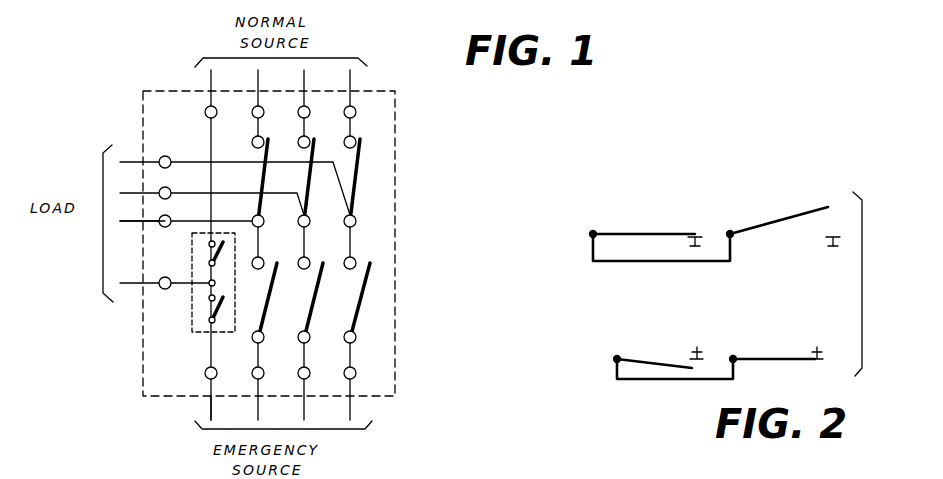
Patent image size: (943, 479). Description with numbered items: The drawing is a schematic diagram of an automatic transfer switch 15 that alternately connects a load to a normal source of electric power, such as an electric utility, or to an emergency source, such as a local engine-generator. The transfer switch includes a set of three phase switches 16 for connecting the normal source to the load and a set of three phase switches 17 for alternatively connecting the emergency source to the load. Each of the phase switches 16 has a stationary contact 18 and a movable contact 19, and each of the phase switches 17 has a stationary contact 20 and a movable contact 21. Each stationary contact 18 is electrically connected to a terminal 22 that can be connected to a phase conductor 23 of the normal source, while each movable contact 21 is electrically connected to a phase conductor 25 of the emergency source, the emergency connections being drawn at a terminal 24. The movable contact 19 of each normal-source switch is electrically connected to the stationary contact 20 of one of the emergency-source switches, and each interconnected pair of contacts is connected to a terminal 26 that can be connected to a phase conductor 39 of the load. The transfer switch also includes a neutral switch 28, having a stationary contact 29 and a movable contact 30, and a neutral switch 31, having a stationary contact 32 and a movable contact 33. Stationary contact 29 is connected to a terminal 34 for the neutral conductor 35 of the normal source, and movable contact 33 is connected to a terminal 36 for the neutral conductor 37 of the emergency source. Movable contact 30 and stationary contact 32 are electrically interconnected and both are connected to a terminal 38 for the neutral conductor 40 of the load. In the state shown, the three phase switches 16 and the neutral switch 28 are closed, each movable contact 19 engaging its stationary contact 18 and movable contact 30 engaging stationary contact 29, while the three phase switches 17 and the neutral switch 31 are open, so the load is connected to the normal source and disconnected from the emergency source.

In FIG. 1, the automatic transfer switch 15 is at (372, 207).
In FIG. 1, the phase switches 16 is at (370, 141).
In FIG. 2, the phase switches 16 is at (704, 220).
In FIG. 1, the phase switches 17 is at (363, 337).
In FIG. 2, the phase switches 17 is at (837, 200).
In FIG. 1, the stationary contact 18 is at (356, 135).
In FIG. 2, the stationary contact 18 is at (703, 242).
In FIG. 1, the movable contact 19 is at (357, 172).
In FIG. 2, the movable contact 19 is at (672, 212).
In FIG. 1, the stationary contact 20 is at (357, 256).
In FIG. 2, the stationary contact 20 is at (828, 238).
In FIG. 1, the movable contact 21 is at (365, 288).
In FIG. 2, the movable contact 21 is at (793, 212).
In FIG. 1, the terminal 22 is at (355, 110).
In FIG. 1, the phase conductor 23 is at (350, 82).
In FIG. 1, the emergency source terminals 24 is at (357, 373).
In FIG. 1, the phase conductor 25 is at (355, 411).
In FIG. 1, the terminal 26 is at (159, 161).
In FIG. 1, the neutral switch 28 is at (223, 222).
In FIG. 2, the neutral switch 28 is at (815, 339).
In FIG. 1, the stationary contact 29 is at (208, 245).
In FIG. 2, the stationary contact 29 is at (823, 365).
In FIG. 1, the movable contact 30 is at (218, 253).
In FIG. 2, the movable contact 30 is at (758, 360).
In FIG. 1, the neutral switch 31 is at (198, 335).
In FIG. 2, the neutral switch 31 is at (709, 345).
In FIG. 1, the stationary contact 32 is at (208, 298).
In FIG. 2, the stationary contact 32 is at (703, 364).
In FIG. 1, the movable contact 33 is at (221, 306).
In FIG. 2, the movable contact 33 is at (643, 360).
In FIG. 1, the terminal 34 is at (205, 112).
In FIG. 1, the neutral conductor 35 is at (208, 80).
In FIG. 1, the terminal 36 is at (207, 374).
In FIG. 1, the neutral conductor 37 is at (210, 402).
In FIG. 1, the terminal 38 is at (163, 289).
In FIG. 1, the phase conductor 39 is at (126, 225).
In FIG. 1, the neutral conductor 40 is at (126, 284).